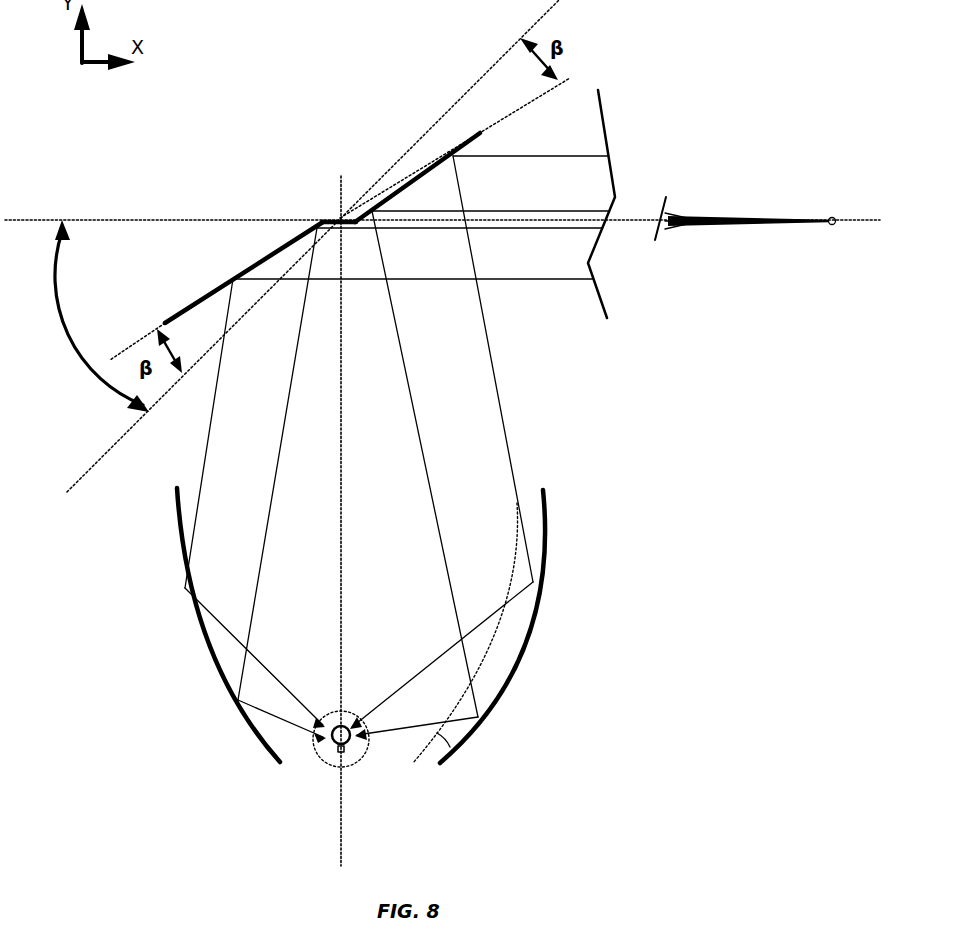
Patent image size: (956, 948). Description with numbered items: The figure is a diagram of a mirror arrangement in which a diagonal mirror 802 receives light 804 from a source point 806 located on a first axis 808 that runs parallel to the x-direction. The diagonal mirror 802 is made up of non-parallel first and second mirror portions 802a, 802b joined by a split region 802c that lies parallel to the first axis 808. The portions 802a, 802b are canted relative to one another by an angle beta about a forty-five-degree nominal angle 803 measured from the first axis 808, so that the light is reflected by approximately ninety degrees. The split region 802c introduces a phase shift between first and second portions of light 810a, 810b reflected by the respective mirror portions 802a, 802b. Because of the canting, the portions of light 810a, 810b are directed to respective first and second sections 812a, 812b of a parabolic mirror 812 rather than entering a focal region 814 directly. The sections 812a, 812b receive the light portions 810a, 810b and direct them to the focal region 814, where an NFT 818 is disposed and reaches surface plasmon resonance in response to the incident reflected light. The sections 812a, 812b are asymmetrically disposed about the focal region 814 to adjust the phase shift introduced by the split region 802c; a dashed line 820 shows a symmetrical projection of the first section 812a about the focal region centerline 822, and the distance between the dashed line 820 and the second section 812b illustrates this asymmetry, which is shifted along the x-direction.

The diagonal mirror 802 is at (345, 220).
The first mirror portion 802a is at (188, 308).
The second mirror portion 802b is at (486, 138).
The split region 802c is at (327, 214).
The 45-degree nominal angle 803 is at (78, 356).
The light 804 is at (526, 228).
The source point 806 is at (831, 218).
The first axis 808 is at (118, 219).
The first portion of light 810a is at (285, 452).
The second portion of light 810b is at (420, 437).
The parabolic mirror 812 is at (424, 625).
The first section 812a is at (258, 738).
The second section 812b is at (583, 663).
The focal region 814 is at (353, 766).
The NFT 818 is at (338, 756).
The dashed line 820 is at (453, 749).
The focal region centerline 822 is at (342, 832).